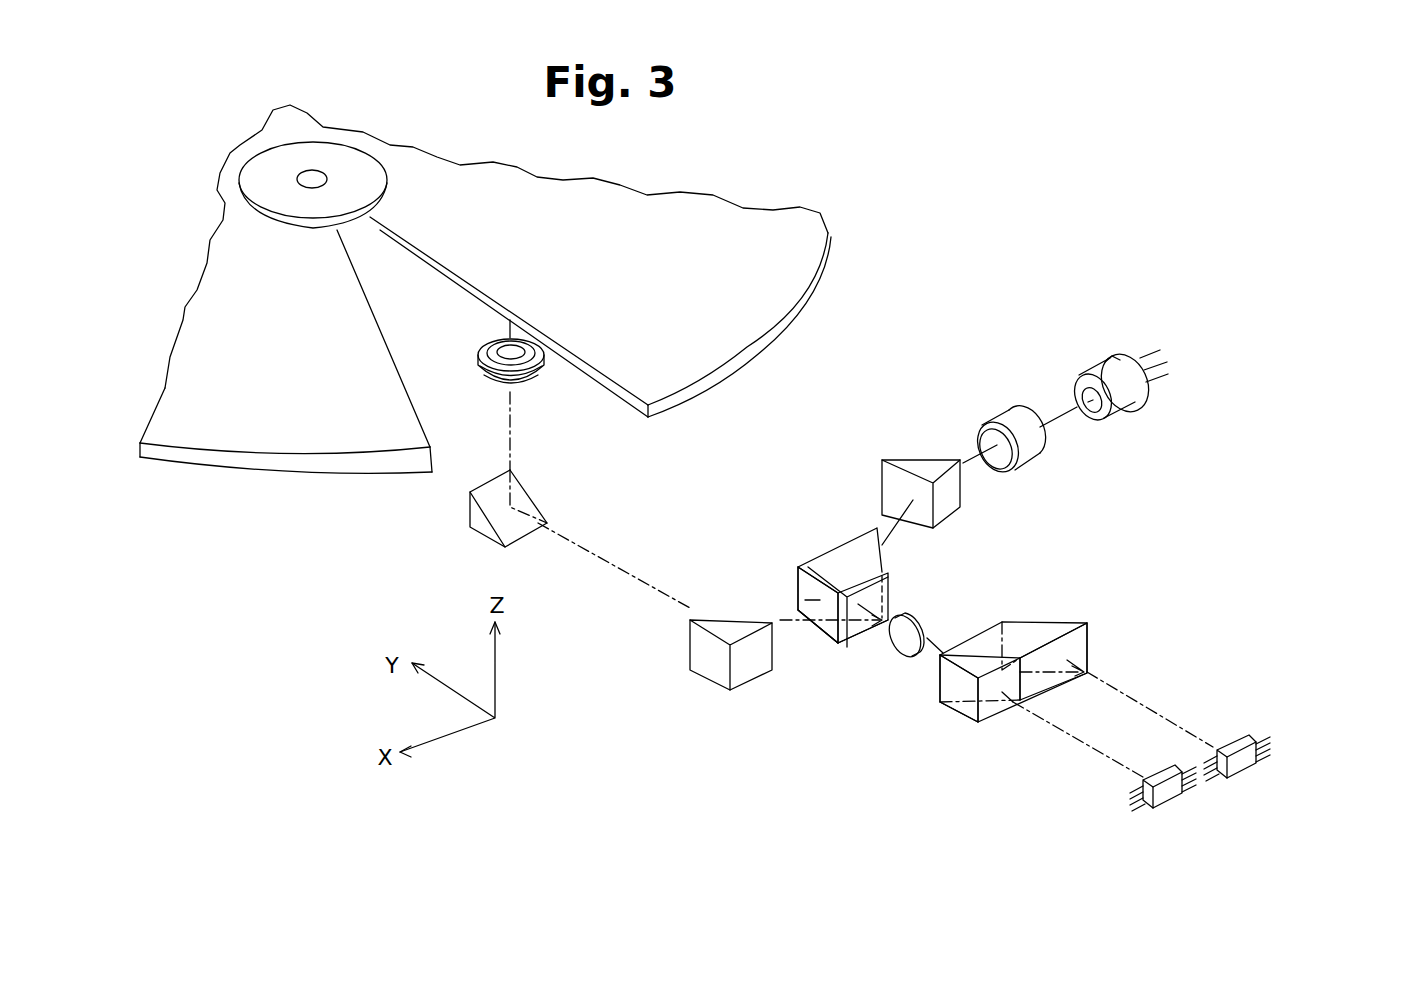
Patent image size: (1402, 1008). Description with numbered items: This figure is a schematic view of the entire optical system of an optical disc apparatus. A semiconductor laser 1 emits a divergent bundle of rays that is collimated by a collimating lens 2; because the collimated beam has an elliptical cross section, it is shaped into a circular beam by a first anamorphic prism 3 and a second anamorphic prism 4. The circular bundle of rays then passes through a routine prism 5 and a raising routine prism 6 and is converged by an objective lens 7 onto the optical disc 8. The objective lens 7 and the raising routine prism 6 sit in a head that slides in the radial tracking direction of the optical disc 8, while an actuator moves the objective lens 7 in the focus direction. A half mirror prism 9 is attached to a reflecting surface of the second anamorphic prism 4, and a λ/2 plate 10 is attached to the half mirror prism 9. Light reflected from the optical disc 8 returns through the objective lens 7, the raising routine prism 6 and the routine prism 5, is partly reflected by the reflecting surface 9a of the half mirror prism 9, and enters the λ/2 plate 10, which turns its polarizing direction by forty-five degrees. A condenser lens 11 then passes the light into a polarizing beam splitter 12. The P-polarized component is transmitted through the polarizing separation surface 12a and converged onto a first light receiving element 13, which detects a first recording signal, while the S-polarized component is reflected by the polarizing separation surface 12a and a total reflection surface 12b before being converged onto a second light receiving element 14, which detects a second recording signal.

The semiconductor laser 1 is at (1132, 353).
The collimating lens 2 is at (1008, 417).
The first anamorphic prism 3 is at (953, 497).
The second anamorphic prism 4 is at (853, 548).
The routine prism 5 is at (713, 670).
The raising routine prism 6 is at (483, 527).
The objective lens 7 is at (547, 373).
The optical disc 8 is at (856, 218).
The half mirror prism 9 is at (833, 580).
The reflecting surface 9a is at (808, 593).
The λ/2 plate 10 is at (857, 628).
The condenser lens 11 is at (920, 630).
The polarizing beam splitter 12 is at (1000, 717).
The polarizing separation surface 12a is at (937, 687).
The total reflection surface 12b is at (1080, 640).
The first light receiving element 13 is at (1175, 793).
The second light receiving element 14 is at (1245, 757).